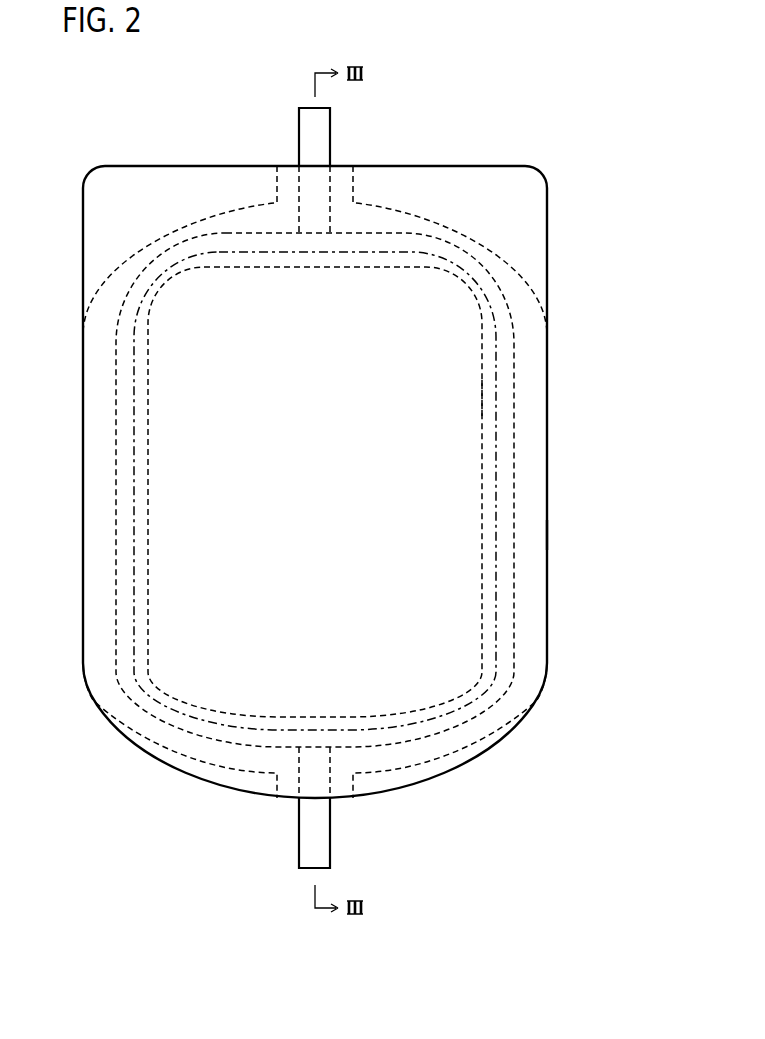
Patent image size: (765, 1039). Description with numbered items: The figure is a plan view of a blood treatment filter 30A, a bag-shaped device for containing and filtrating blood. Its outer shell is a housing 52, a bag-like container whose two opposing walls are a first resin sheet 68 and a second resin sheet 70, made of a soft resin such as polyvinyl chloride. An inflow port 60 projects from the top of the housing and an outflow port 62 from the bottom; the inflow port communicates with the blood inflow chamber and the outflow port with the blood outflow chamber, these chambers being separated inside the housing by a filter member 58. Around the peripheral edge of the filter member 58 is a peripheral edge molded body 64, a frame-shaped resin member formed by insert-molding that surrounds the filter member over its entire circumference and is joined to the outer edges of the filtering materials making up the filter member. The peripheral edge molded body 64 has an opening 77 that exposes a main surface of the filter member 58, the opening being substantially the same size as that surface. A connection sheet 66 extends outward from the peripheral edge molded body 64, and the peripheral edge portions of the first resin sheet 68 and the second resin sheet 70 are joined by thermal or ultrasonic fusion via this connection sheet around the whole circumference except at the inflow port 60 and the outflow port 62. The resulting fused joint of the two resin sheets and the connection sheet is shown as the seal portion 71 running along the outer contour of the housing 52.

The blood treatment filter 30A is at (557, 276).
The inflow port 60 is at (308, 133).
The outflow port 62 is at (308, 841).
The seal portion 71 is at (480, 250).
The connection sheet 66 is at (128, 388).
The peripheral edge molded body 64 is at (505, 337).
The filter member 58 is at (455, 582).
The opening 77 is at (482, 408).
The housing 52 is at (583, 515).
The first resin sheet 68 is at (537, 497).
The second resin sheet 70 is at (561, 535).